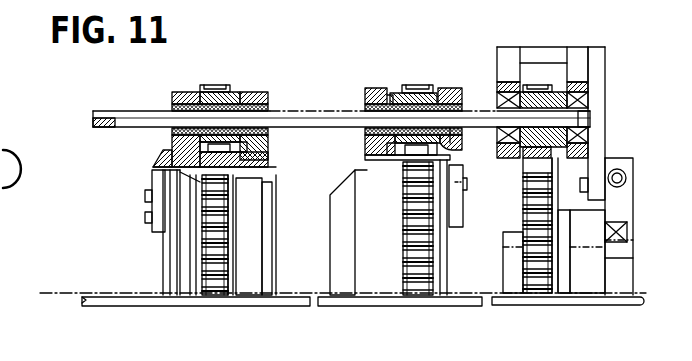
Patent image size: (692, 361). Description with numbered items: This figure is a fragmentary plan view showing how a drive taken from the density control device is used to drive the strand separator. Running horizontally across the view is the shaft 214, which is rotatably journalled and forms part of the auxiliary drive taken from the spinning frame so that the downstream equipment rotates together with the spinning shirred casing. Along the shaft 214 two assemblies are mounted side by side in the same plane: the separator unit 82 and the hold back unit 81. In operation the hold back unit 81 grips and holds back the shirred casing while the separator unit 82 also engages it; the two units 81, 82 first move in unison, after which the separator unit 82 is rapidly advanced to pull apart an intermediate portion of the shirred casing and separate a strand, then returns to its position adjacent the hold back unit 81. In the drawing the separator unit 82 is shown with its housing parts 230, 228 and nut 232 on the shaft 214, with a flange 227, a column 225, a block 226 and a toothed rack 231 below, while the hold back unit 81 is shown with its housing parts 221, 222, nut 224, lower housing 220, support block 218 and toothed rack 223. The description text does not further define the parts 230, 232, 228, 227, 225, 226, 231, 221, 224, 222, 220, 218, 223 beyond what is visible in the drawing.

The shaft 214 is at (101, 111).
The upper bearing housing 230 is at (196, 92).
The locking nut 232 is at (210, 86).
The bearing 228 is at (236, 90).
The separator unit 82 is at (265, 75).
The mounting flange 227 is at (150, 162).
The support column 225 is at (167, 250).
The guide block 226 is at (247, 232).
The rack gear 231 is at (215, 279).
The upper bearing housing 221 is at (397, 100).
The locking nut 224 is at (417, 88).
The bearing 222 is at (427, 87).
The hold back unit 81 is at (447, 73).
The lower bearing housing 220 is at (450, 141).
The support block 218 is at (368, 187).
The rack gear 223 is at (410, 213).